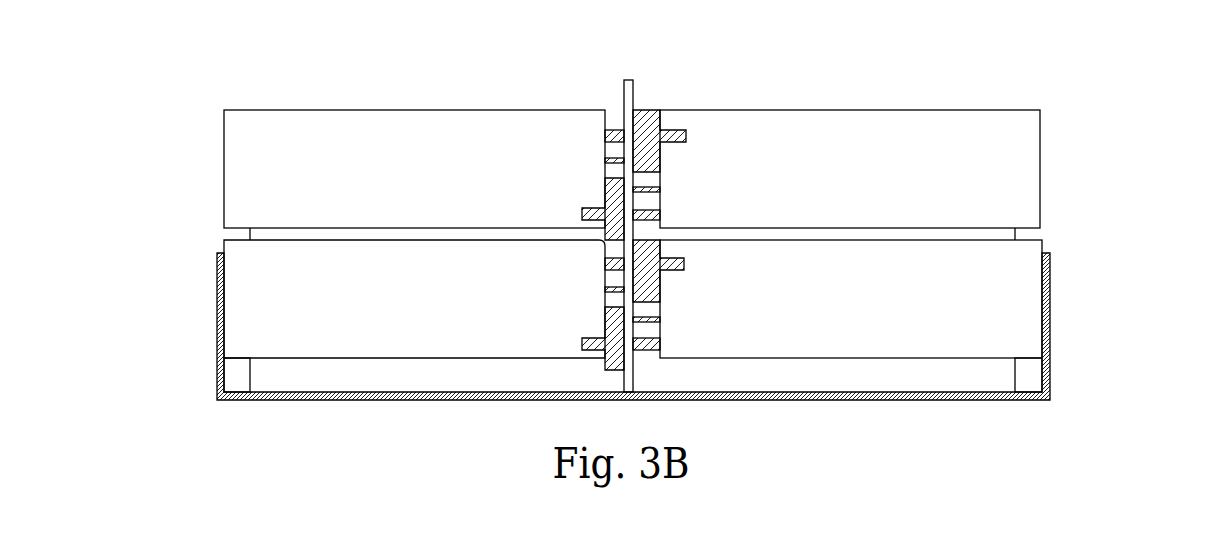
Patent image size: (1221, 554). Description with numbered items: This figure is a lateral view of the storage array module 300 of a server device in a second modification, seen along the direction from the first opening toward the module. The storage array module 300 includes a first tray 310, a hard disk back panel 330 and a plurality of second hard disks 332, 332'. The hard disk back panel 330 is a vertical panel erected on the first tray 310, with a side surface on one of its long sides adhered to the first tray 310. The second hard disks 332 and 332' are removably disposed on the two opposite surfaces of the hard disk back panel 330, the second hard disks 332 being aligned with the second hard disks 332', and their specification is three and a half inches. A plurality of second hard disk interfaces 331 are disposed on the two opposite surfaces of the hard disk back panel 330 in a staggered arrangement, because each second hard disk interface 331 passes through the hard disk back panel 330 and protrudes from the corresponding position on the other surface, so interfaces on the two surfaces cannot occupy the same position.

The storage array module 300 is at (1041, 57).
The first tray 310 is at (1050, 375).
The hard disk back panel 330 is at (628, 78).
The second hard disk interfaces 331 is at (612, 198).
The second hard disks 332 is at (414, 198).
The second hard disks 332' is at (851, 198).